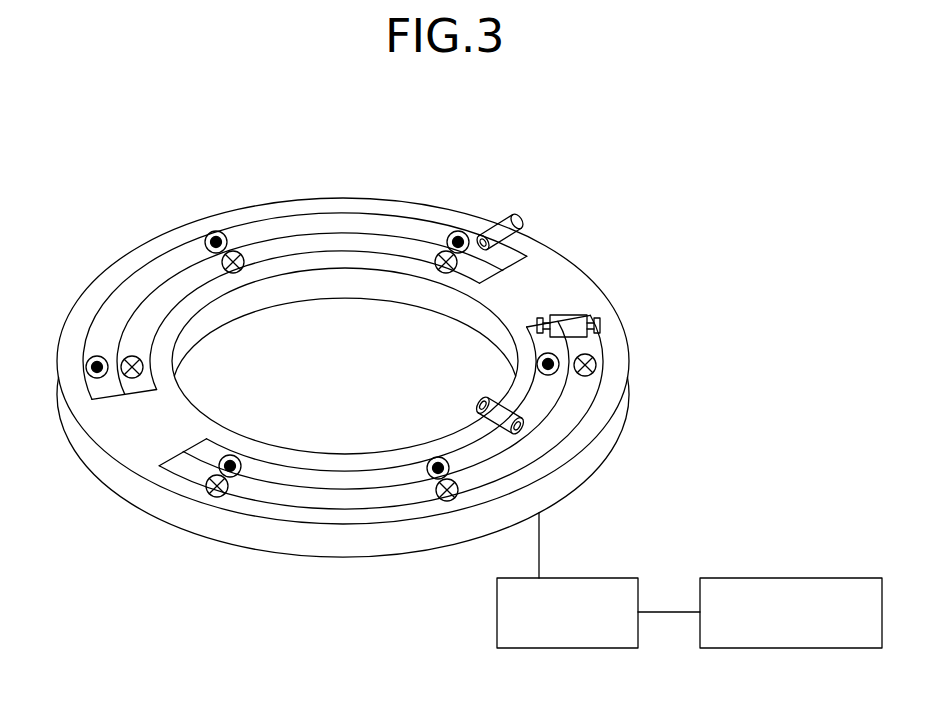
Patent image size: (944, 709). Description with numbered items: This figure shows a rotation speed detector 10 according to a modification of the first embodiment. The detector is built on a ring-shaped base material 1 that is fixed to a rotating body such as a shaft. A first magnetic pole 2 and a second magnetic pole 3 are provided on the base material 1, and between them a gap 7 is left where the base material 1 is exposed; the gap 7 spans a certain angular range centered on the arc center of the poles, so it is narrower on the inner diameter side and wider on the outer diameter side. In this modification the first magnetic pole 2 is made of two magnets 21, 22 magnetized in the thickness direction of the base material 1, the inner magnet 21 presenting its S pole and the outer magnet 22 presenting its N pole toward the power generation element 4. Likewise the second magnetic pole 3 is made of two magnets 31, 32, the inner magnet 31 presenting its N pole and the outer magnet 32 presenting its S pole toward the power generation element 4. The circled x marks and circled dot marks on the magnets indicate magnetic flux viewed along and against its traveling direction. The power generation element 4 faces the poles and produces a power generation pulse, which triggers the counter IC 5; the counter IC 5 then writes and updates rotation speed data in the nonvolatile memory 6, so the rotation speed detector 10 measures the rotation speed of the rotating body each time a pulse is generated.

The base material 1 is at (122, 487).
The first magnetic pole 2 is at (290, 228).
The magnet 21 is at (168, 298).
The magnet 22 is at (187, 263).
The second magnetic pole 3 is at (382, 483).
The magnet 31 is at (547, 392).
The magnet 32 is at (565, 418).
The power generation element 4 is at (494, 214).
The counter integrated circuit (IC) 5 is at (597, 578).
The nonvolatile memory 6 is at (841, 578).
The gap 7 is at (542, 287).
The rotation speed detector 10 is at (346, 163).